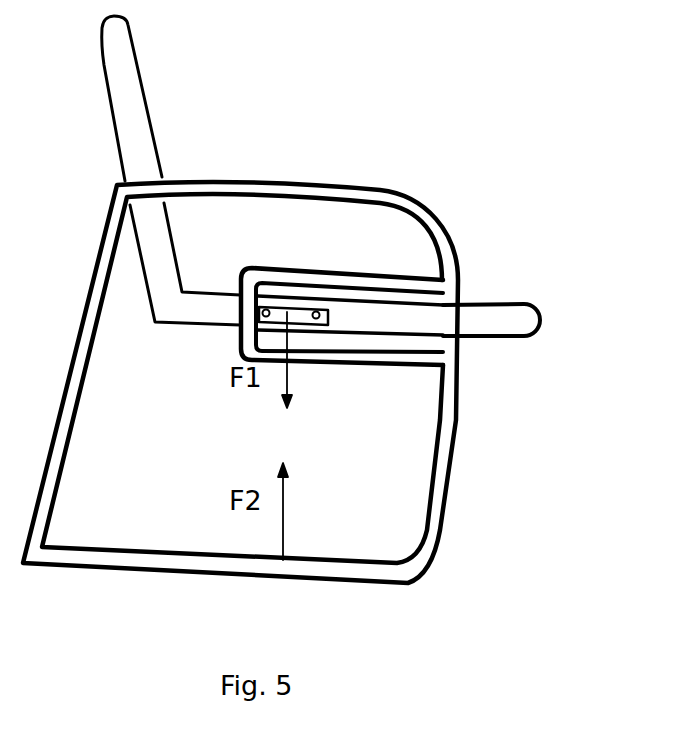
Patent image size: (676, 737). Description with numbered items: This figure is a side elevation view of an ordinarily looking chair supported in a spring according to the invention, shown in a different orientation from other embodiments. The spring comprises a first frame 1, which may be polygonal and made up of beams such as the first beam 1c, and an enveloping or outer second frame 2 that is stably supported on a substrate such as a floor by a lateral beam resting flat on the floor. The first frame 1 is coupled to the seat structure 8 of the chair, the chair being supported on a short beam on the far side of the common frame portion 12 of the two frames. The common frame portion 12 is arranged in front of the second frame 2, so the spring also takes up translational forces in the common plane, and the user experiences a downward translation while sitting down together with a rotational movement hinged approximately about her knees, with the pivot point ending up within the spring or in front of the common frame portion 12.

The first frame 1 is at (330, 355).
The first beam 1c is at (240, 331).
The second frame 2 is at (448, 482).
The seat structure 8 is at (545, 318).
The common frame portion 12 is at (453, 317).